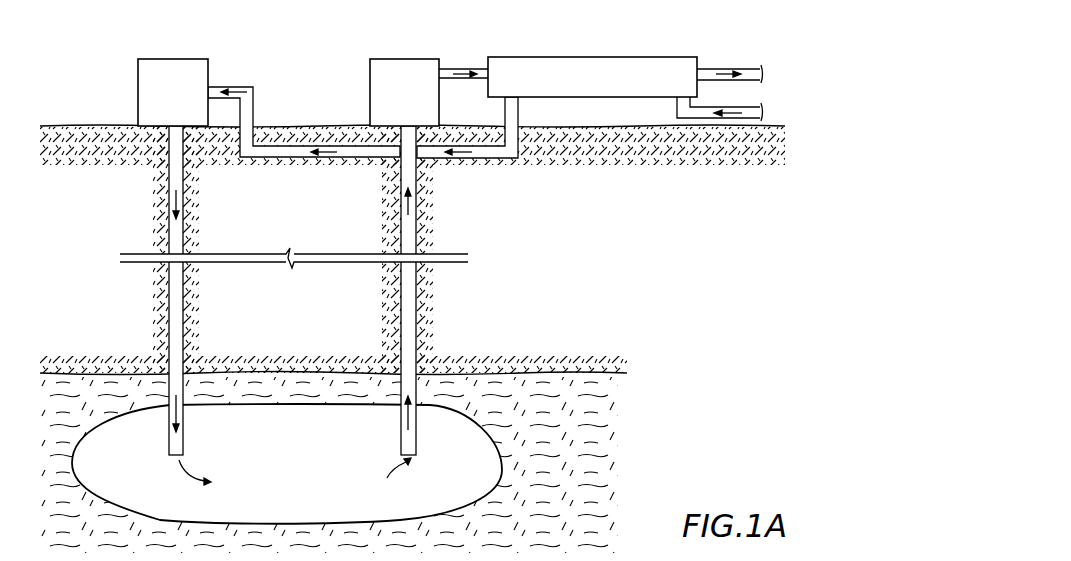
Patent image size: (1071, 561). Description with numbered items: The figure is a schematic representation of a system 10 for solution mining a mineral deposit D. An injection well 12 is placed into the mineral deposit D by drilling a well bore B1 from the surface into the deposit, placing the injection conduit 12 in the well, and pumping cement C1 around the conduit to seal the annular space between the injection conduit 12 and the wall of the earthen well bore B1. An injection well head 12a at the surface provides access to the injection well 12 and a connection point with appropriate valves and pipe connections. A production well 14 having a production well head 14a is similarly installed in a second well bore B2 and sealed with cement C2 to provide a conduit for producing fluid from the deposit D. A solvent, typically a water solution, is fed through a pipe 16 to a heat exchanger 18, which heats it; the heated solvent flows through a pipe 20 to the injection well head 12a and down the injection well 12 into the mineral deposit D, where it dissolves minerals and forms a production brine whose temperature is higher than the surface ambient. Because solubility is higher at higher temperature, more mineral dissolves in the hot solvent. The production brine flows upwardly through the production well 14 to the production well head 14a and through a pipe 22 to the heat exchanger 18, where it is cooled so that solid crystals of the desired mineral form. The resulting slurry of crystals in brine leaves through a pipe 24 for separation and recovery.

The system 10 is at (614, 422).
The injection well 12 is at (194, 293).
The injection well head 12a is at (138, 76).
The production well 14 is at (432, 286).
The production well head 14a is at (370, 76).
The pipe 16 is at (748, 107).
The heat exchanger 18 is at (611, 57).
The pipe 20 is at (519, 107).
The pipe 22 is at (466, 68).
The pipe 24 is at (733, 68).
The well bore B1 is at (192, 312).
The well bore B2 is at (421, 312).
The cement C1 is at (165, 321).
The cement C2 is at (391, 326).
The mineral deposit D is at (302, 475).